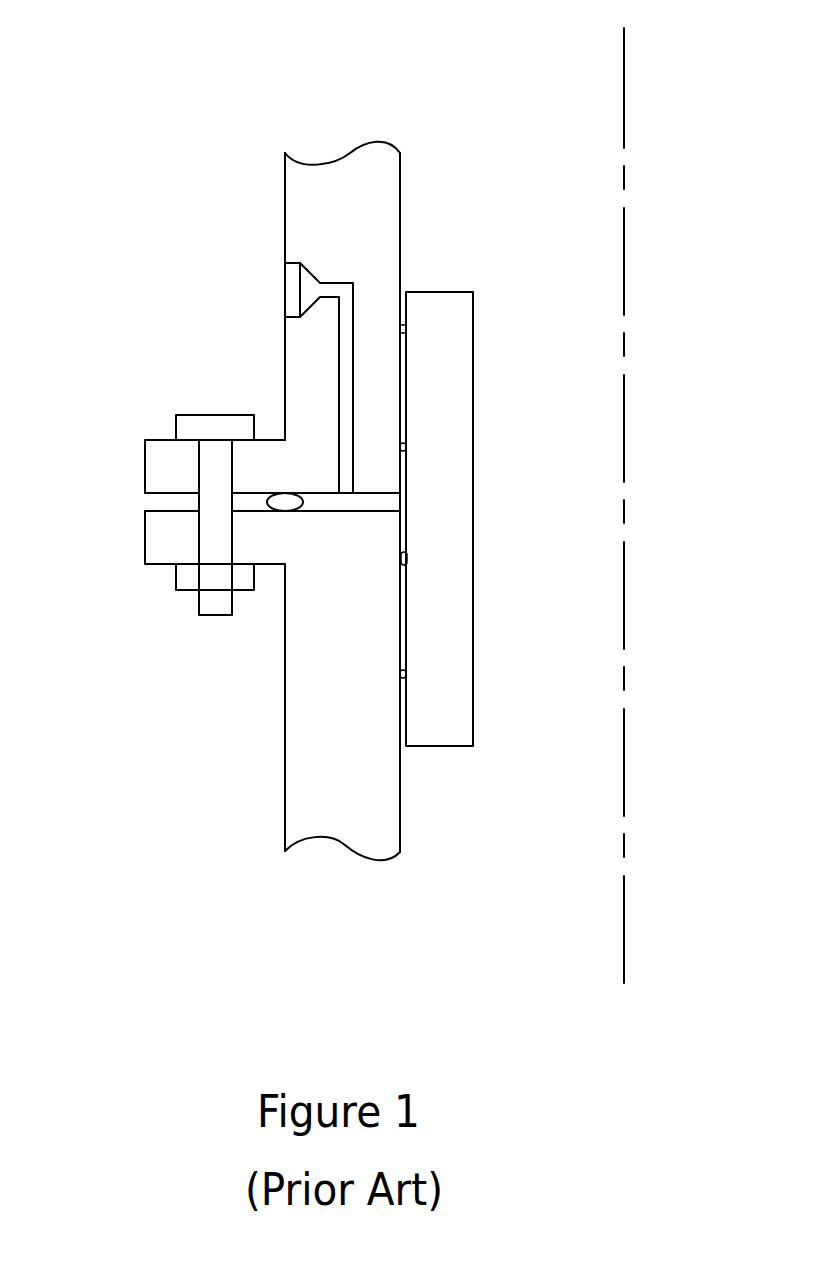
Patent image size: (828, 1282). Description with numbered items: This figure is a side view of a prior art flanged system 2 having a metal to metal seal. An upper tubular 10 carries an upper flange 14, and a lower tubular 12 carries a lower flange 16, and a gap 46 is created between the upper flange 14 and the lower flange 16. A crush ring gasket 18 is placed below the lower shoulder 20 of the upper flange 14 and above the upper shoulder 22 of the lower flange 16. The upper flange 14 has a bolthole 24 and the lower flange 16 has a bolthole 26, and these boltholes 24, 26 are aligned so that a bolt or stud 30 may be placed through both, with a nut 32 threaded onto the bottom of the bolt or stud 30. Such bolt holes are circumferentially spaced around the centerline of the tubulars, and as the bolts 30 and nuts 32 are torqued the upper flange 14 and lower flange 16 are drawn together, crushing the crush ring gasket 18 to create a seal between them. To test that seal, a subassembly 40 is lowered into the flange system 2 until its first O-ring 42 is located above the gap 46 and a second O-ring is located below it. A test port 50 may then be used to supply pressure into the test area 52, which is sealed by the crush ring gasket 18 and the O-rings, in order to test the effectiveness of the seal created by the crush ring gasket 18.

The flange system 2 is at (235, 865).
The upper tubular 10 is at (317, 198).
The lower tubular 12 is at (285, 751).
The upper flange 14 is at (163, 472).
The lower flange 16 is at (163, 535).
The crush ring gasket 18 is at (282, 500).
The lower shoulder 20 is at (378, 493).
The upper shoulder 22 is at (353, 511).
The bolthole 24 is at (199, 465).
The bolthole 26 is at (198, 547).
The bolt or stud 30 is at (220, 423).
The nut 32 is at (190, 580).
The subassembly 40 is at (433, 372).
The first O-ring 42 is at (406, 447).
The gap 46 is at (242, 502).
The test port 50 is at (308, 288).
The test area 52 is at (407, 558).